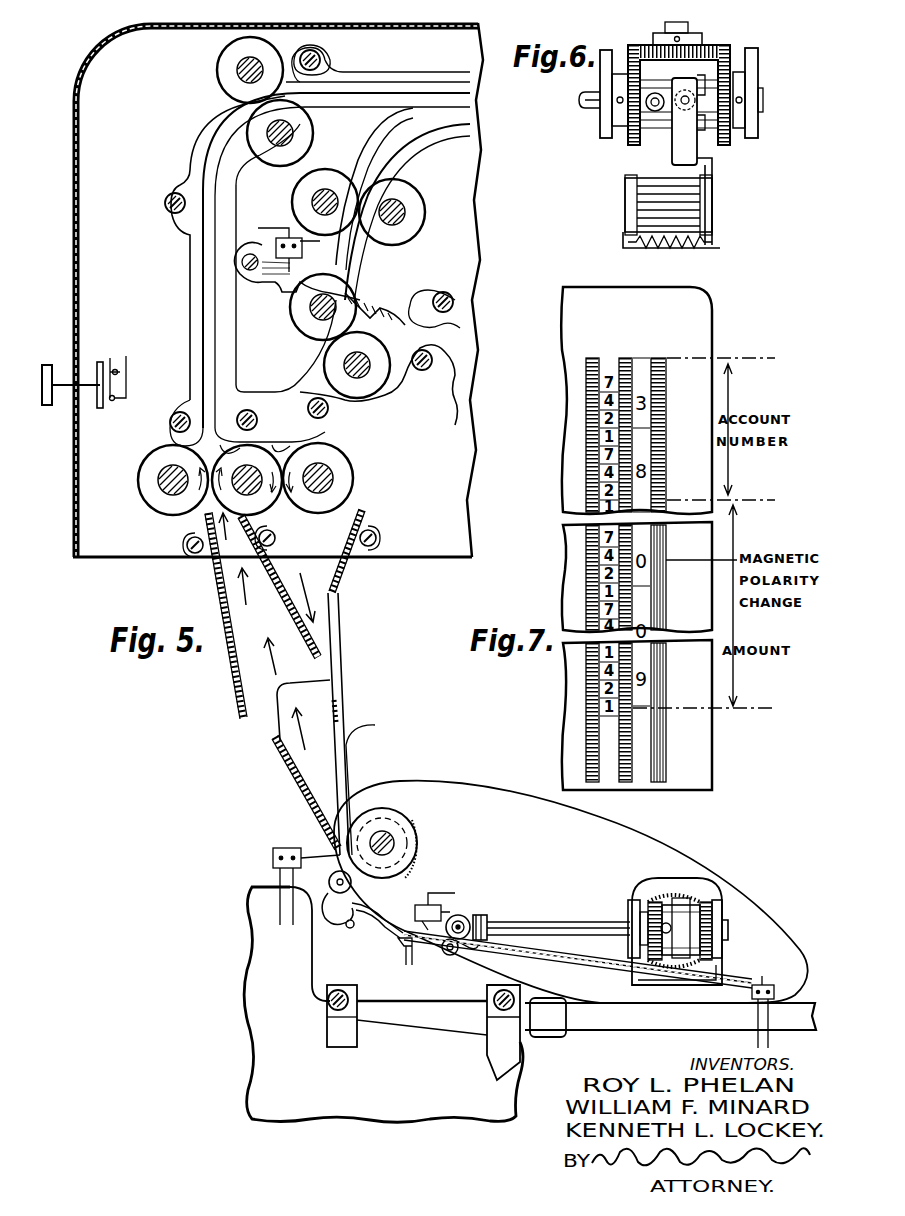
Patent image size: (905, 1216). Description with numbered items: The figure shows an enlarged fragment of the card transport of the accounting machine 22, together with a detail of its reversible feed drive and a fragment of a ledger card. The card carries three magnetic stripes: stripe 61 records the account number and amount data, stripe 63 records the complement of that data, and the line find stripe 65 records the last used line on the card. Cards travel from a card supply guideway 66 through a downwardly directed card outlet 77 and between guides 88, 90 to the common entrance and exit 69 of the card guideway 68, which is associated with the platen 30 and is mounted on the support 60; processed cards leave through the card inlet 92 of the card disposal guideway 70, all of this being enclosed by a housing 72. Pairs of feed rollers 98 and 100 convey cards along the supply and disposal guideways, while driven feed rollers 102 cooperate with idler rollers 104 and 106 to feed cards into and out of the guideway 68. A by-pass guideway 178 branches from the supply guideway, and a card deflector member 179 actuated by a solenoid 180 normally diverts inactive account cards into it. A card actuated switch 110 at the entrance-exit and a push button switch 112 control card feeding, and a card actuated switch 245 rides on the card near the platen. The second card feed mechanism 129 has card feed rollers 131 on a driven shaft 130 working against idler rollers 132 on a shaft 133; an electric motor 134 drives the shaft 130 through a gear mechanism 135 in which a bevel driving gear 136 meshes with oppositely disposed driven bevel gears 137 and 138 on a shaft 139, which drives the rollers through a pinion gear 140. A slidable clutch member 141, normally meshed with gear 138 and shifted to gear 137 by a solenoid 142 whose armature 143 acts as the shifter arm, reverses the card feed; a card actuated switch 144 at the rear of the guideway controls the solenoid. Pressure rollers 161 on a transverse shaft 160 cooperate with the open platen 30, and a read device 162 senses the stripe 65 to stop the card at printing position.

In FIG. 5, the machine 22 is at (338, 1110).
In FIG. 5, the platen 30 is at (400, 820).
In FIG. 5, the support 60 is at (616, 1008).
In FIG. 7, the magnetic stripe 61 is at (592, 358).
In FIG. 7, the magnetic stripe 63 is at (625, 358).
In FIG. 7, the line find magnetic stripe 65 is at (661, 358).
In FIG. 5, the card supply guideway 66 is at (452, 368).
In FIG. 5, the card guideway 68 is at (592, 966).
In FIG. 5, the common card entrance and exit 69 is at (377, 918).
In FIG. 5, the card disposal guideway 70 is at (205, 258).
In FIG. 5, the housing 72 is at (406, 30).
In FIG. 5, the card outlet 77 is at (300, 441).
In FIG. 5, the guide 88 is at (340, 636).
In FIG. 5, the guide 90 is at (292, 772).
In FIG. 5, the card inlet 92 is at (162, 462).
In FIG. 5, the card feed rollers 98 is at (290, 316).
In FIG. 5, the card feed rollers 100 is at (232, 65).
In FIG. 5, the feed rollers 102 is at (265, 500).
In FIG. 5, the idler rollers 104 is at (342, 467).
In FIG. 5, the idler rollers 106 is at (162, 505).
In FIG. 5, the card actuated switch 110 is at (284, 848).
In FIG. 5, the push button switch 112 is at (97, 360).
In FIG. 5, the second card feed mechanism 129 is at (682, 900).
In FIG. 5, the driven transverse shaft 130 is at (482, 914).
In FIG. 5, the card feed rollers 131 is at (466, 917).
In FIG. 5, the idler rollers 132 is at (449, 956).
In FIG. 5, the shaft 133 is at (460, 952).
In FIG. 5, the electric motor 134 is at (718, 895).
In FIG. 5, the gear mechanism 135 is at (690, 905).
In FIG. 5, the bevel driving gear 136 is at (663, 898).
In FIG. 6, the bevel driving gear 136 is at (716, 55).
In FIG. 5, the driven bevel gear 137 is at (640, 910).
In FIG. 6, the driven bevel gear 137 is at (628, 142).
In FIG. 5, the driven bevel gear 138 is at (716, 950).
In FIG. 6, the driven bevel gear 138 is at (735, 64).
In FIG. 5, the shaft 139 is at (598, 905).
In FIG. 6, the shaft 139 is at (586, 110).
In FIG. 5, the pinion gear 140 is at (490, 922).
In FIG. 5, the clutch member 141 is at (683, 898).
In FIG. 6, the clutch member 141 is at (658, 132).
In FIG. 6, the solenoid 142 is at (705, 199).
In FIG. 6, the solenoid armature 143 is at (700, 160).
In FIG. 5, the card actuated switch 144 is at (752, 1006).
In FIG. 5, the transverse shaft 160 is at (352, 886).
In FIG. 5, the pressure rollers 161 is at (330, 892).
In FIG. 5, the read device 162 is at (404, 946).
In FIG. 5, the by-pass guideway 178 is at (372, 262).
In FIG. 5, the card deflector member 179 is at (400, 302).
In FIG. 5, the solenoid 180 is at (302, 243).
In FIG. 5, the card actuated switch 245 is at (440, 898).